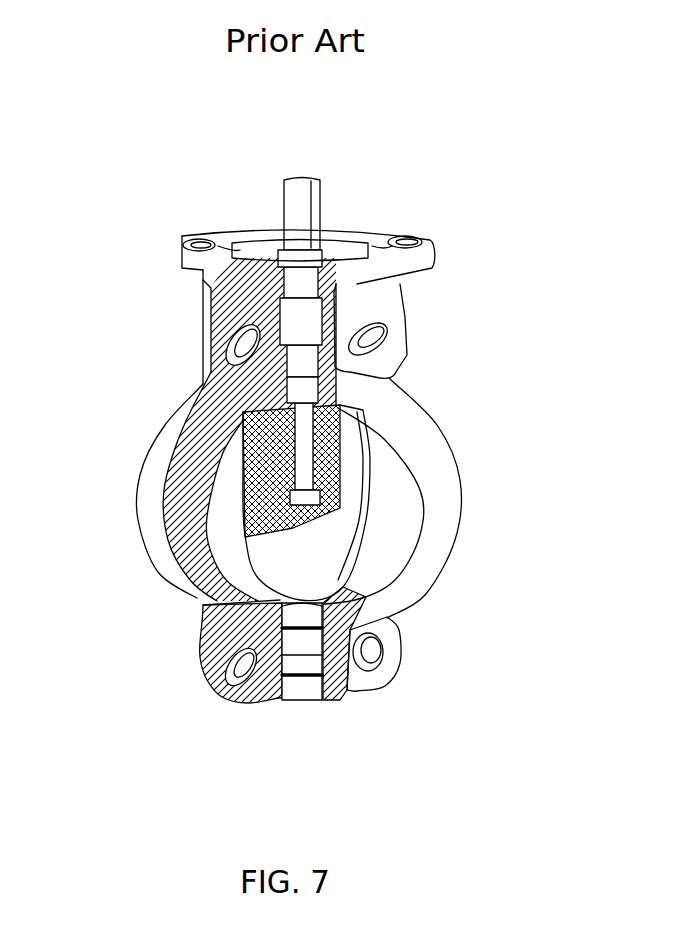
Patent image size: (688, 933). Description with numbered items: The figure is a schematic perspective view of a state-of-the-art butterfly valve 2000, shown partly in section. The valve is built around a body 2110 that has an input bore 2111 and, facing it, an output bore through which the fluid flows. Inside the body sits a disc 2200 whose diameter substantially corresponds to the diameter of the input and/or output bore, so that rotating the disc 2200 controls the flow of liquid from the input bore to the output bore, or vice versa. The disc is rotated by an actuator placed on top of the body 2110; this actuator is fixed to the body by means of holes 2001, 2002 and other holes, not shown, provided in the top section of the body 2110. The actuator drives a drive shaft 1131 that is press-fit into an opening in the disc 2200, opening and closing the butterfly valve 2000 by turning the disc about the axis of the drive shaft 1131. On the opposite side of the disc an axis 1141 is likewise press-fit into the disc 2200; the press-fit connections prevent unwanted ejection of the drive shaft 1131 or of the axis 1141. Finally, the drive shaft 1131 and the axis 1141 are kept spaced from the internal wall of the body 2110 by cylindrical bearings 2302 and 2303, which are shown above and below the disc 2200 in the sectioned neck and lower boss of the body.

The butterfly valve 2000 is at (478, 171).
The hole 2001 is at (408, 234).
The hole 2002 is at (197, 234).
The drive shaft 1131 is at (300, 177).
The cylindrical bearing 2302 is at (293, 315).
The disc 2200 is at (243, 458).
The input bore 2111 is at (215, 520).
The body 2110 is at (152, 562).
The axis 1141 is at (203, 623).
The cylindrical bearing 2303 is at (222, 663).